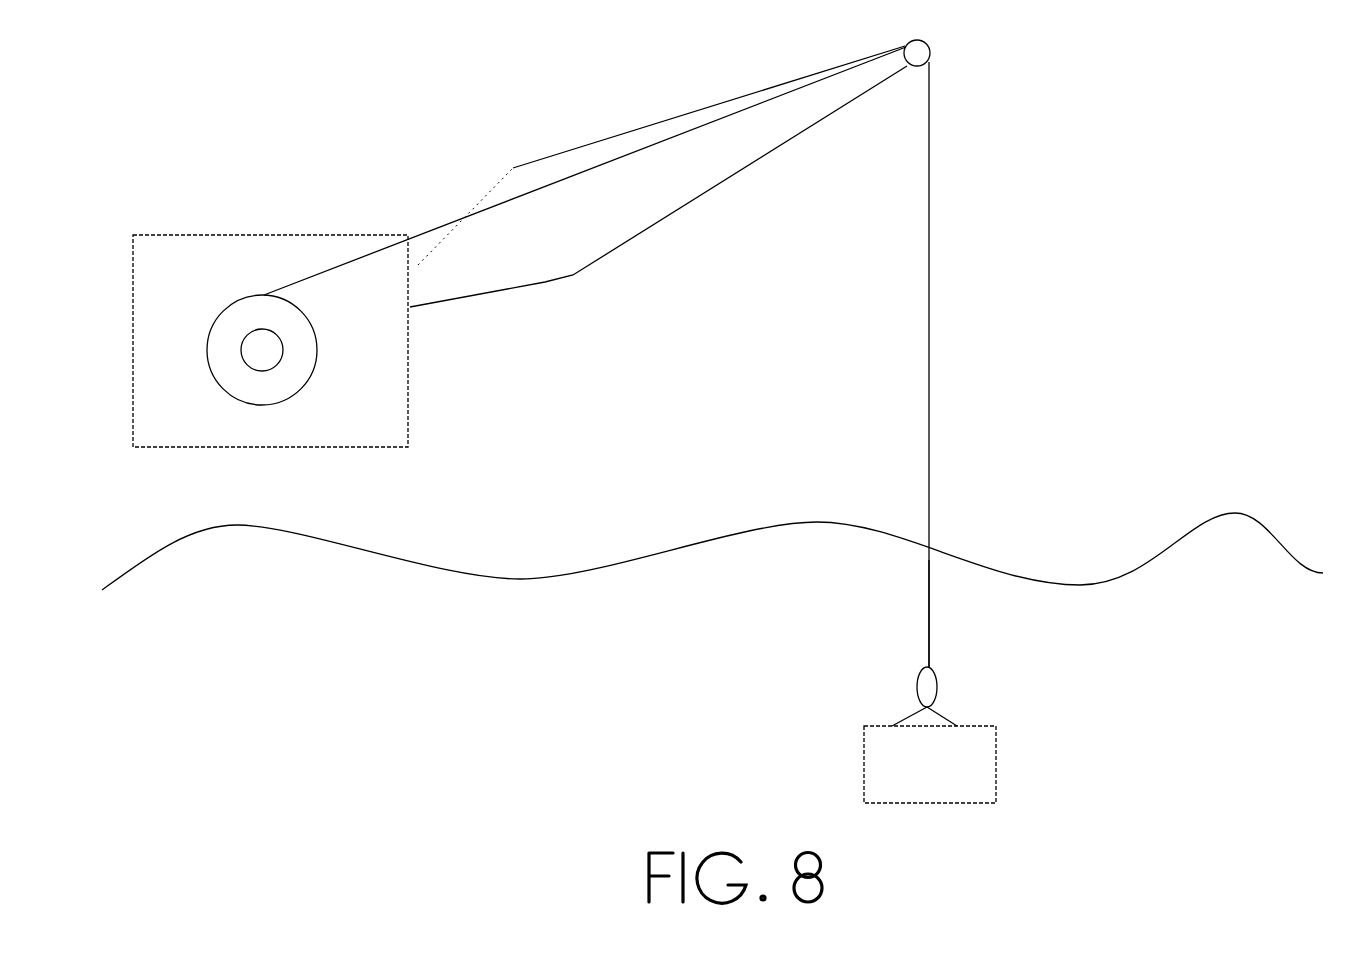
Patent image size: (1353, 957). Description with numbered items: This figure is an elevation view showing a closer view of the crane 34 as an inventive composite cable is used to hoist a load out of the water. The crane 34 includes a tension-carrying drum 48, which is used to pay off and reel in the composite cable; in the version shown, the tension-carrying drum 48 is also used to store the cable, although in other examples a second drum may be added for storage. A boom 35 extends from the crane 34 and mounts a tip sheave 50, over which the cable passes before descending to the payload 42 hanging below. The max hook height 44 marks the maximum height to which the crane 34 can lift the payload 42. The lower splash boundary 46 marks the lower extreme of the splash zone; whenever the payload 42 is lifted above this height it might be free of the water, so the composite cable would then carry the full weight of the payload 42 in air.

The crane 34 is at (380, 447).
The boom 35 is at (543, 283).
The payload 42 is at (996, 755).
The max hook height 44 is at (943, 77).
The lower splash boundary 46 is at (937, 630).
The tension-carrying drum 48 is at (265, 405).
The tip sheave 50 is at (932, 53).